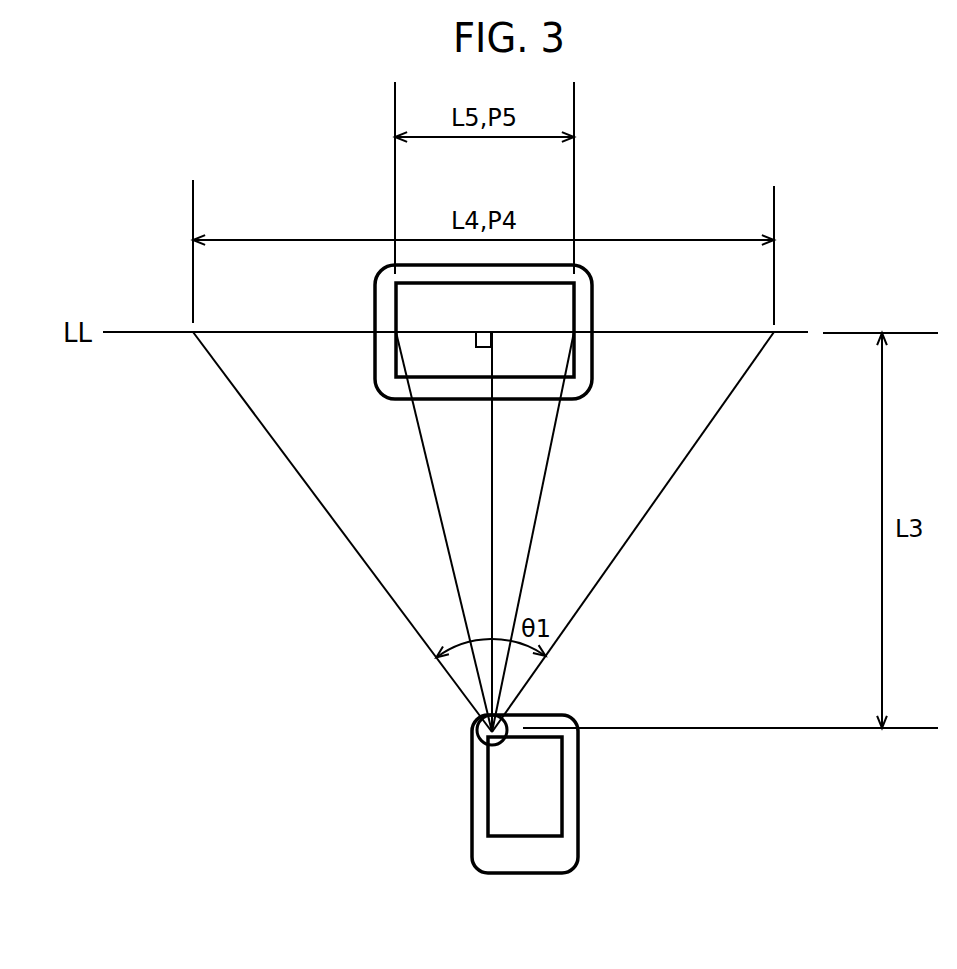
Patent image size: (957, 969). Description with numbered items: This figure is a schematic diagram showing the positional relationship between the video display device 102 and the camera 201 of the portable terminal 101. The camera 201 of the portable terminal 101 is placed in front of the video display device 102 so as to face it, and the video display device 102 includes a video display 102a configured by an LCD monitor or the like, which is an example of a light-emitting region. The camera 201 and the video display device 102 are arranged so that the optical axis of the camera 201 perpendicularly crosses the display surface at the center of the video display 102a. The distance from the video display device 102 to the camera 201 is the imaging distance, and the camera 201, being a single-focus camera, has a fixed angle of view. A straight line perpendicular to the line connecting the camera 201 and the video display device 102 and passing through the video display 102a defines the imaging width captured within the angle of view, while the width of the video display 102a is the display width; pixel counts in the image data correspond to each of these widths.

The portable terminal 101 is at (580, 824).
The camera 201 is at (477, 739).
The video display device 102 is at (373, 323).
The video display 102a is at (576, 316).